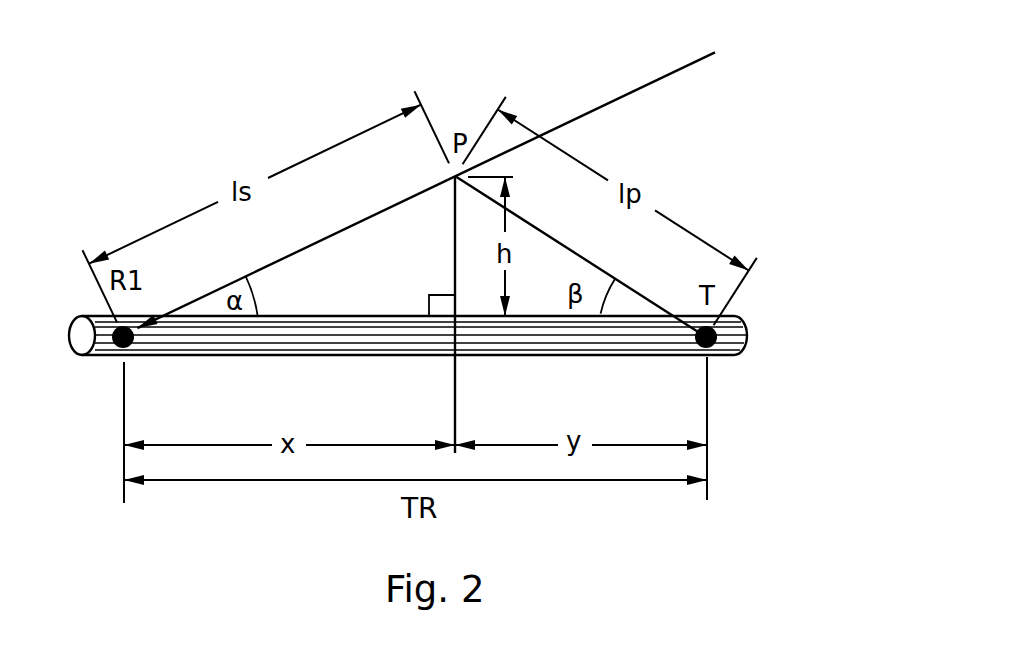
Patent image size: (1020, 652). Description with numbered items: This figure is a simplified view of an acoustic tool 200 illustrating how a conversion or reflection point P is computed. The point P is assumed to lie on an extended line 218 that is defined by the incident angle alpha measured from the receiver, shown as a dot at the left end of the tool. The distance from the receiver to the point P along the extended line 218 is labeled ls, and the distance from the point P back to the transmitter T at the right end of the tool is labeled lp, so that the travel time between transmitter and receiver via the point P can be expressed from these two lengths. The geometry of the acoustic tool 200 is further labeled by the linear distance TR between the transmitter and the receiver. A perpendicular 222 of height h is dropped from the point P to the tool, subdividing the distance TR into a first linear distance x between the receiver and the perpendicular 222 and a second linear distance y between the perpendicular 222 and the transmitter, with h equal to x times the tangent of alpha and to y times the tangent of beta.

The acoustic tool 200 is at (343, 357).
The extended line 218 is at (610, 100).
The perpendicular 222 is at (455, 254).